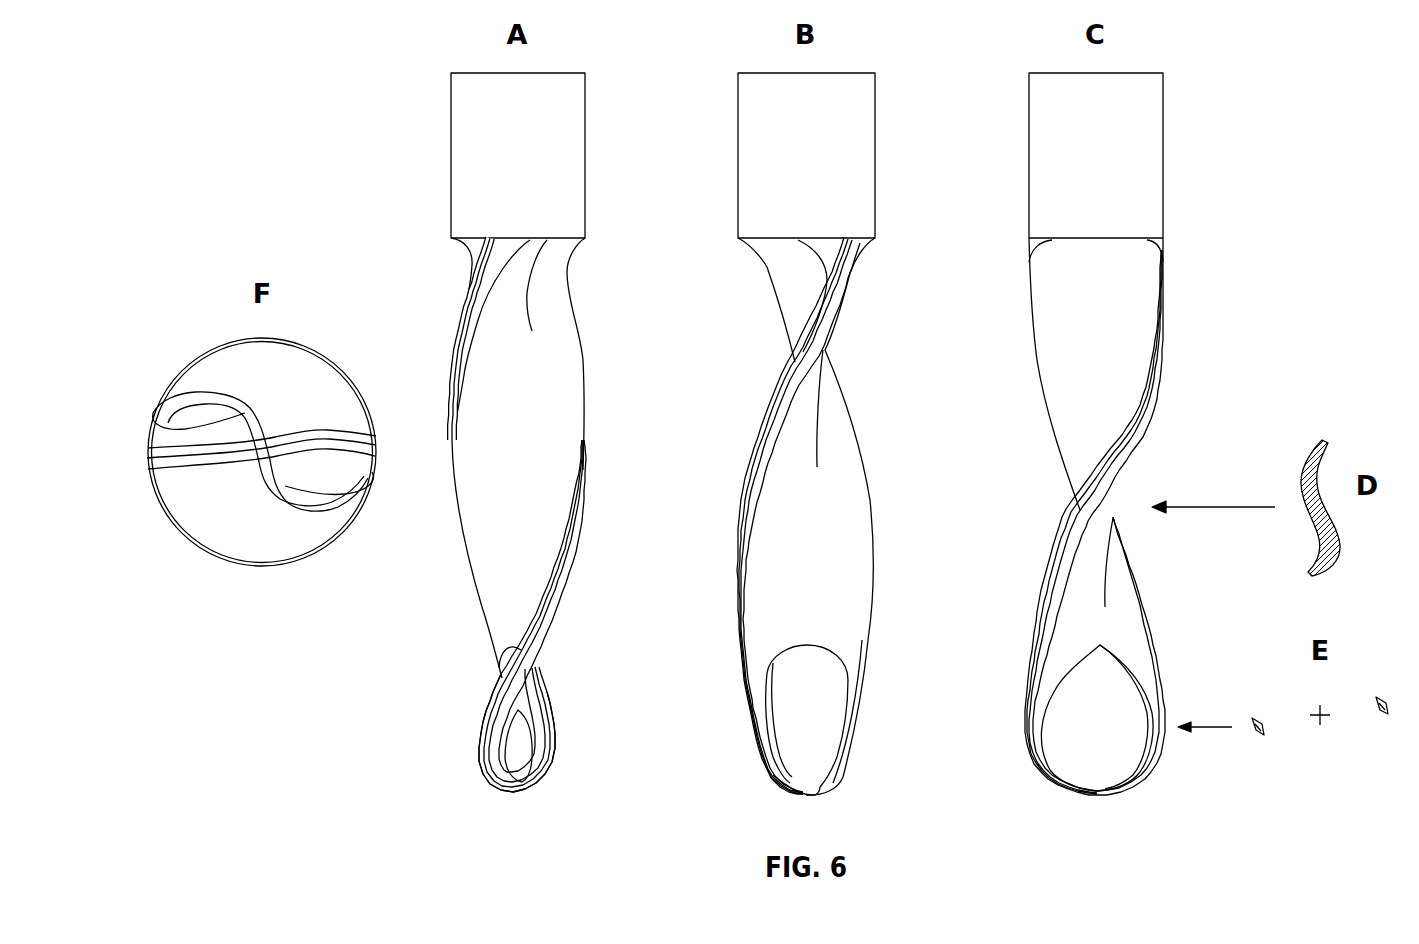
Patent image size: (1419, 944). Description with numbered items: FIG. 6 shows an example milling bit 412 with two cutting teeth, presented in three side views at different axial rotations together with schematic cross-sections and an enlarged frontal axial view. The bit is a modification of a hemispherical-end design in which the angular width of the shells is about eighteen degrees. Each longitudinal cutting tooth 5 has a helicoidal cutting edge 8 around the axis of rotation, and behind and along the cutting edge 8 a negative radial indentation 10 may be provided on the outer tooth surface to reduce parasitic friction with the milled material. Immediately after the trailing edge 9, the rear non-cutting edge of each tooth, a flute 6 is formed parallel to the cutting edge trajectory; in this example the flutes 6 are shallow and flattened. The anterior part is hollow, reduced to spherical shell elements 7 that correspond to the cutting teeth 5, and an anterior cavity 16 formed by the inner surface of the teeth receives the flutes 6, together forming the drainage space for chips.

The milling bit 412 is at (407, 109).
The cutting tooth 5 is at (562, 550).
The negative radial indentation 10 is at (548, 611).
The cutting edge 8 is at (480, 727).
The spherical shell element 7 is at (540, 753).
The trailing edge 9 is at (800, 380).
The flute 6 is at (817, 513).
The anterior cavity 16 is at (821, 709).